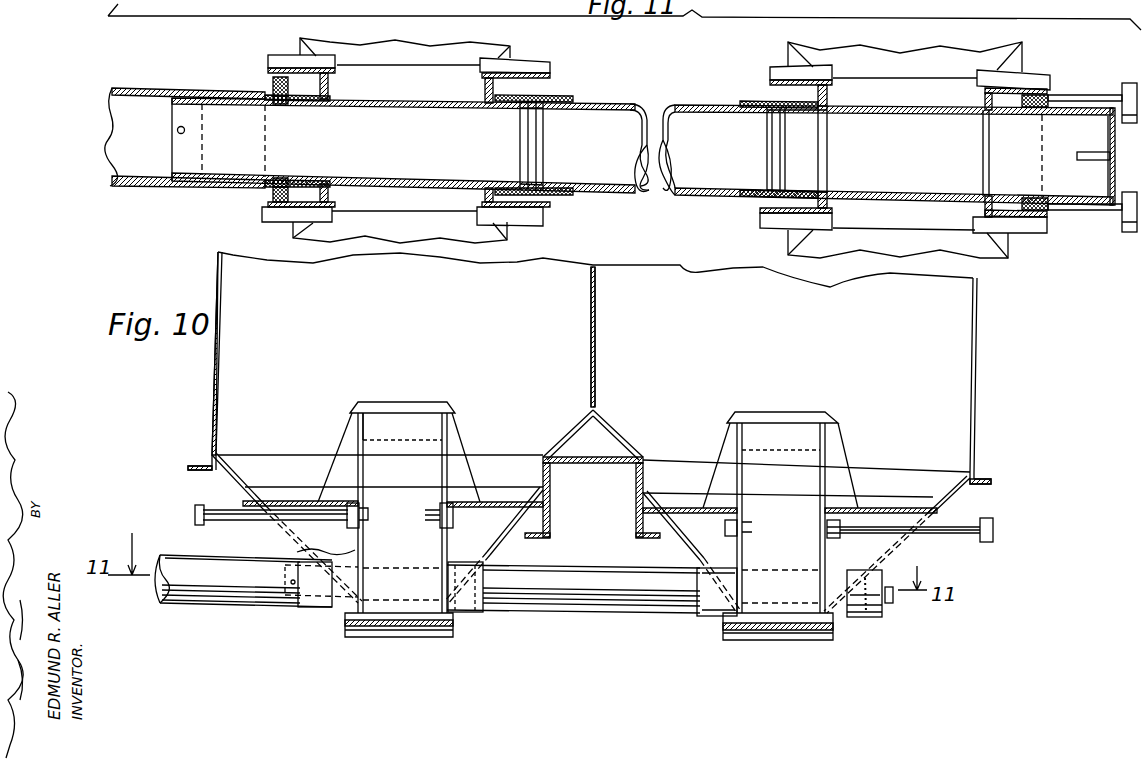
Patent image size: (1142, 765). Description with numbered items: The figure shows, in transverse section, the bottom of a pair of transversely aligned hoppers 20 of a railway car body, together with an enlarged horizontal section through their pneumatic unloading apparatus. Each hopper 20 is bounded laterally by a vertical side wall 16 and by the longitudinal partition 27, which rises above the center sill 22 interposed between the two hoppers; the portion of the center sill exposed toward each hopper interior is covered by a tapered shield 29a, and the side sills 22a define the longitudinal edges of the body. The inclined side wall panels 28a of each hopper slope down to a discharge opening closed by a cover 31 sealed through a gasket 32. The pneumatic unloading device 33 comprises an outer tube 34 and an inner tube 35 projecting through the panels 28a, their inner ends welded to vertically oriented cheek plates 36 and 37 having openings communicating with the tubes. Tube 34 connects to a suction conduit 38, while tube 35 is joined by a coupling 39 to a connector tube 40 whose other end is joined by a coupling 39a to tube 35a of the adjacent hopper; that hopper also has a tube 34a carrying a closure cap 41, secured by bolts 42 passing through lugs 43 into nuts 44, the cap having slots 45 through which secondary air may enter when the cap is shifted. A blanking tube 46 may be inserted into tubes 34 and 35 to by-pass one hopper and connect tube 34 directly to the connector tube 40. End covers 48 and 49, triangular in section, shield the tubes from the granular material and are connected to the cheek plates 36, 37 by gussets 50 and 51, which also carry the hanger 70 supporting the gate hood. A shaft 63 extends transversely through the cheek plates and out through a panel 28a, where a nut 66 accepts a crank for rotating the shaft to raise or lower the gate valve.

In FIG. 10, the side wall 16 is at (221, 300).
In FIG. 10, the hopper 20 is at (422, 322).
In FIG. 10, the center sill 22 is at (616, 457).
In FIG. 10, the side sill 22a is at (200, 465).
In FIG. 10, the partition 27 is at (597, 350).
In FIG. 10, the side wall panel 28a is at (234, 456).
In FIG. 10, the tapered shield 29a is at (598, 423).
In FIG. 10, the cover 31 is at (381, 637).
In FIG. 10, the gasket 32 is at (432, 638).
In FIG. 11, the pneumatic unloading device 33 is at (633, 93).
In FIG. 10, the pneumatic unloading device 33 is at (562, 612).
In FIG. 11, the outer tube 34 is at (280, 104).
In FIG. 11, the tube 34a is at (1015, 118).
In FIG. 11, the inner tube 35 is at (502, 106).
In FIG. 11, the tube 35a is at (806, 112).
In FIG. 11, the cheek plate 36 is at (335, 95).
In FIG. 10, the cheek plate 36 is at (364, 450).
In FIG. 11, the cheek plate 37 is at (485, 88).
In FIG. 10, the cheek plate 37 is at (440, 426).
In FIG. 11, the suction conduit 38 is at (222, 188).
In FIG. 10, the suction conduit 38 is at (232, 606).
In FIG. 11, the coupling 39 is at (550, 197).
In FIG. 11, the coupling 39a is at (740, 198).
In FIG. 10, the coupling 39a is at (706, 616).
In FIG. 11, the connector tube 40 is at (630, 190).
In FIG. 10, the connector tube 40 is at (628, 600).
In FIG. 11, the closure cap 41 is at (1120, 170).
In FIG. 10, the closure cap 41 is at (870, 620).
In FIG. 11, the bolt 42 is at (1124, 233).
In FIG. 11, the lug 43 is at (1088, 213).
In FIG. 11, the nut 44 is at (270, 200).
In FIG. 11, the slot 45 is at (1085, 162).
In FIG. 11, the blanking tube 46 is at (375, 108).
In FIG. 10, the end cover 48 is at (300, 500).
In FIG. 10, the end cover 49 is at (503, 500).
In FIG. 10, the gusset 50 is at (352, 420).
In FIG. 10, the gusset 51 is at (456, 430).
In FIG. 10, the shaft 63 is at (232, 519).
In FIG. 10, the nut 66 is at (195, 509).
In FIG. 10, the hanger 70 is at (418, 396).